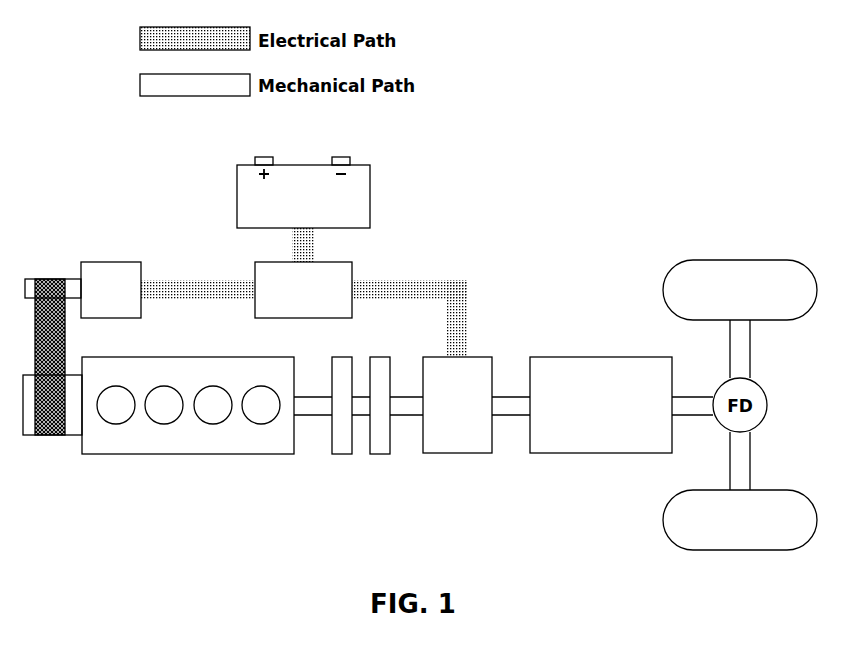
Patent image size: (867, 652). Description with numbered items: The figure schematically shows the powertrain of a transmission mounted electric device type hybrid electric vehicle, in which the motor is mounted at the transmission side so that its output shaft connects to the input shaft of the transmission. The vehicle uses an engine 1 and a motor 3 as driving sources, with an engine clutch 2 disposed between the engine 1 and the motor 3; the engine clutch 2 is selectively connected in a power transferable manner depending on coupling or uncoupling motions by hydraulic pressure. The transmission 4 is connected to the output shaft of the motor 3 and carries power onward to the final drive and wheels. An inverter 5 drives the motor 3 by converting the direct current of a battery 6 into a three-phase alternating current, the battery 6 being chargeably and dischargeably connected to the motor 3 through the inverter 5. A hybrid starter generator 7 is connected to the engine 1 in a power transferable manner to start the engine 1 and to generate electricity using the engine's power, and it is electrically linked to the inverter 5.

The engine 1 is at (183, 454).
The engine clutch 2 is at (380, 454).
The motor 3 is at (452, 453).
The transmission 4 is at (596, 453).
The inverter 5 is at (352, 266).
The battery 6 is at (370, 197).
The hybrid starter generator (HSG) 7 is at (108, 262).